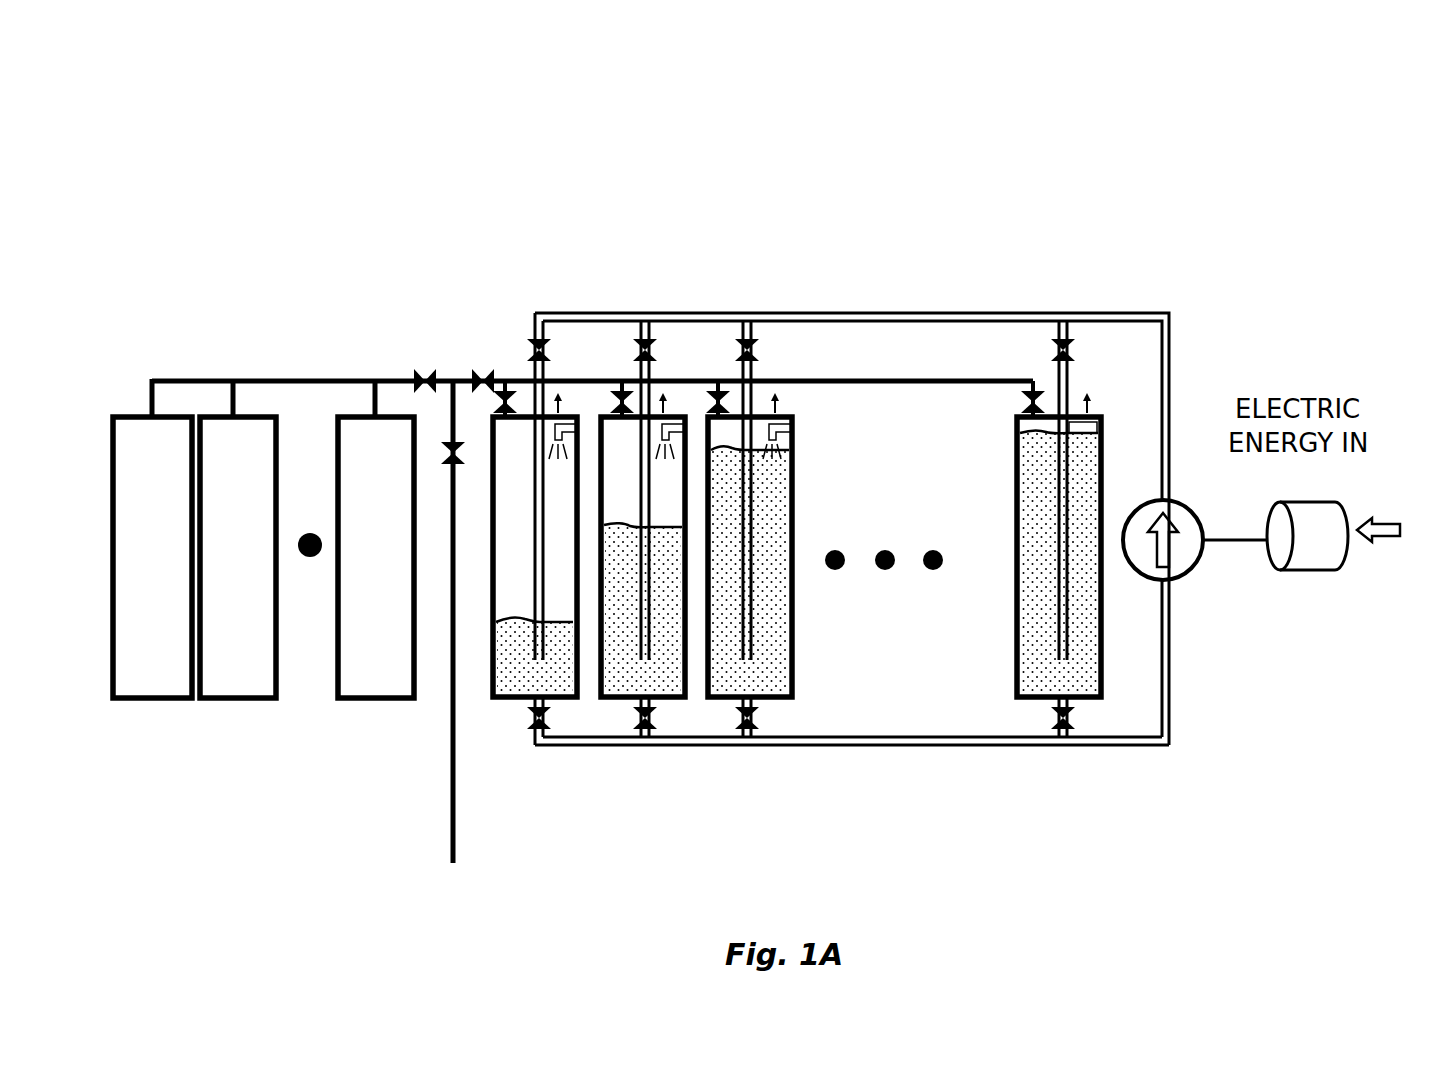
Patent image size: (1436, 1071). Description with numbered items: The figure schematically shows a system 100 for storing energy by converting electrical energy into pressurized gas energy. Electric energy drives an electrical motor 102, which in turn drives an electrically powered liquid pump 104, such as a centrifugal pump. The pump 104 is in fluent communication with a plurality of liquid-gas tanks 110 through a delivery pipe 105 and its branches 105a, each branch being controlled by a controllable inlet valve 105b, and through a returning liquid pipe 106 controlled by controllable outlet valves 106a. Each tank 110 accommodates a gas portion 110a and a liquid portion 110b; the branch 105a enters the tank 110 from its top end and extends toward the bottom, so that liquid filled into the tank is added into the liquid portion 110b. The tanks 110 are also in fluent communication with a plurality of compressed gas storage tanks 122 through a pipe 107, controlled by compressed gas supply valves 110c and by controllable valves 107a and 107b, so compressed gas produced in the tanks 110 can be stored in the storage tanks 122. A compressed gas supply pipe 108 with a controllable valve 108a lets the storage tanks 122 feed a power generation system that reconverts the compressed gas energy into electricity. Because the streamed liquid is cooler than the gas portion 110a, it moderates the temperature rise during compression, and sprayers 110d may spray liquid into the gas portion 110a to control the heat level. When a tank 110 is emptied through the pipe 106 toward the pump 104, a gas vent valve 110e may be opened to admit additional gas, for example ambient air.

The system for storing energy 100 is at (1355, 182).
The electrical motor 102 is at (1323, 572).
The liquid pump 104 is at (1195, 567).
The delivery pipe 105 is at (918, 312).
The branch of delivery pipe 105a is at (543, 503).
The controllable inlet valve 105b is at (530, 355).
The returning liquid pipe 106 is at (907, 736).
The controllable outlet valve 106a is at (542, 715).
The pipe 107 is at (248, 379).
The controllable valve 107a is at (427, 368).
The controllable valve 107b is at (485, 368).
The compressed gas supply pipe 108 is at (455, 830).
The controllable valve 108a is at (449, 460).
The liquid-gas tank 110 is at (662, 700).
The gas portion 110a is at (1053, 423).
The liquid portion 110b is at (1035, 627).
The compressed gas supply valve 110c is at (568, 422).
The sprayer 110d is at (612, 400).
The gas vent valve 110e is at (677, 405).
The compressed gas storage tank 122 is at (368, 700).